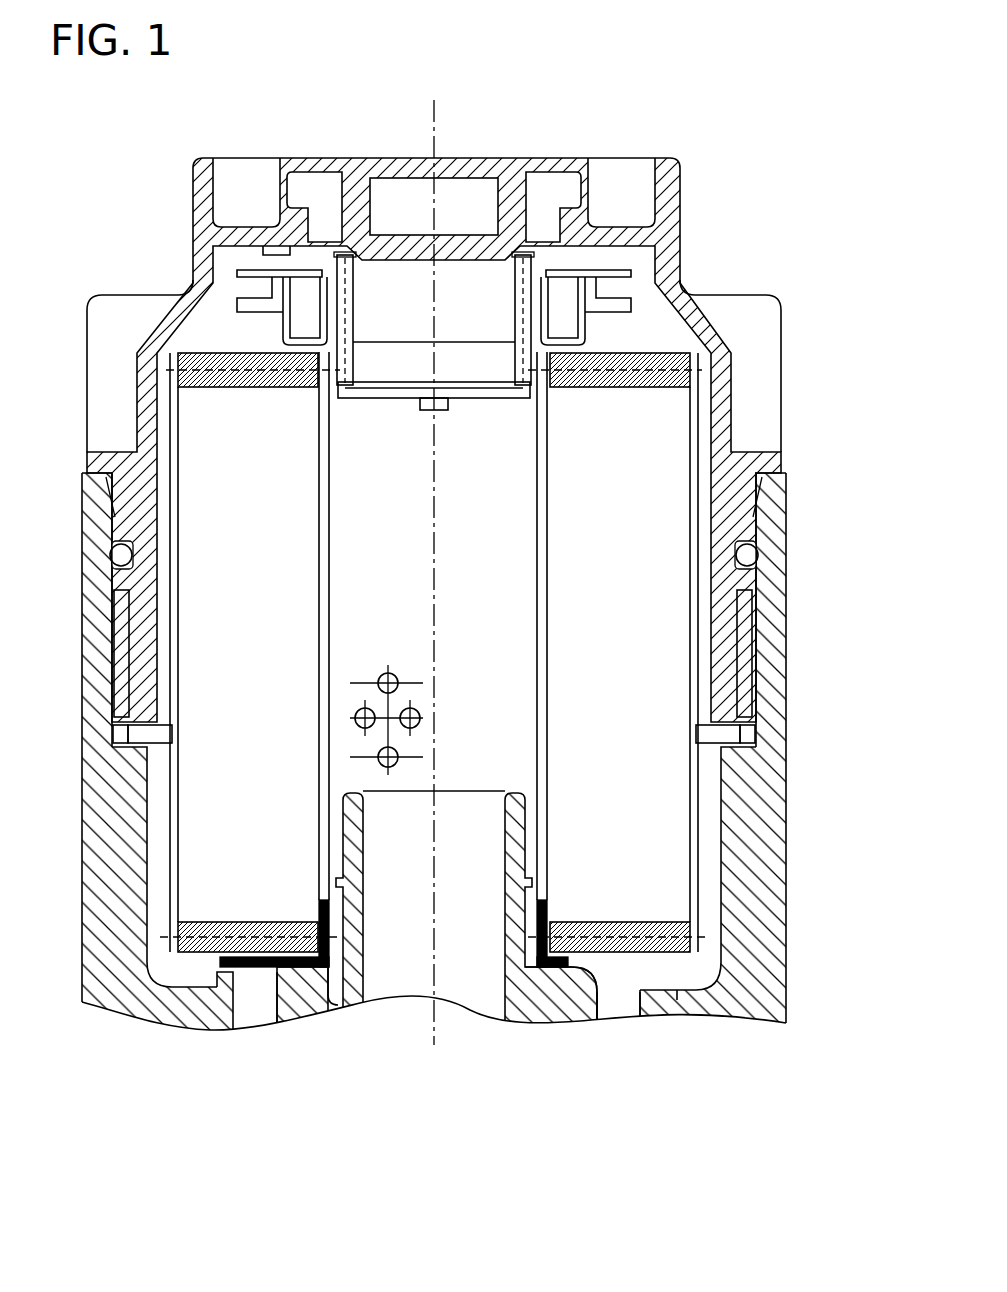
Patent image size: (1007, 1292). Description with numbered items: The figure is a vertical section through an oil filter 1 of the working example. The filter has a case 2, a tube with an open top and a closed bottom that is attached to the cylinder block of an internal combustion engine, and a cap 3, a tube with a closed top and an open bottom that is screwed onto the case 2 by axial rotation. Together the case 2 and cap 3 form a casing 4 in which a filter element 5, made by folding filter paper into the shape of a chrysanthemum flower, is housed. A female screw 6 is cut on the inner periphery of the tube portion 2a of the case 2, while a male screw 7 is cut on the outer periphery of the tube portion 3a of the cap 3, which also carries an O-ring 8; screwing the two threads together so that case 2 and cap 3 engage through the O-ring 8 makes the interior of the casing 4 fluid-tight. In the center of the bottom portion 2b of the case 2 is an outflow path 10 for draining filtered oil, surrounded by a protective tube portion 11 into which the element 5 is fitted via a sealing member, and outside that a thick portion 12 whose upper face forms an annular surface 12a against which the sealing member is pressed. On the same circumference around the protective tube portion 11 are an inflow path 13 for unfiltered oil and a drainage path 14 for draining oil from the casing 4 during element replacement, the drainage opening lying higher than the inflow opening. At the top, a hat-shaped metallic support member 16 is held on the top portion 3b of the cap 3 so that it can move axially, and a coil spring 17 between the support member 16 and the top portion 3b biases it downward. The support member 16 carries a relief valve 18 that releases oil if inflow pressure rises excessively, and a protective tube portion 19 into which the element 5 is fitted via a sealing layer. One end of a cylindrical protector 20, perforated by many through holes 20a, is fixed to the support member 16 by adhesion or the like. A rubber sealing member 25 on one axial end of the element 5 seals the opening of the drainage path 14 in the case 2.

The oil filter 1 is at (462, 603).
The case 2 is at (483, 809).
The tube portion 2a is at (775, 637).
The bottom portion 2b is at (668, 1024).
The cap 3 is at (491, 402).
The tube portion 3a is at (727, 402).
The top portion 3b is at (510, 175).
The casing 4 is at (790, 502).
The filter element 5 is at (443, 645).
The female screw 6 is at (750, 733).
The male screw 7 is at (763, 655).
The O-ring 8 is at (750, 553).
The outflow path 10 is at (368, 957).
The protective tube portion 11 is at (510, 833).
The thick portion 12 is at (305, 972).
The annular surface 12a is at (677, 1003).
The inflow path 13 is at (593, 1003).
The drainage path 14 is at (252, 1000).
The support member 16 is at (258, 268).
The coil spring 17 is at (353, 315).
The relief valve 18 is at (463, 385).
The protective tube portion 19 is at (455, 235).
The protector 20 is at (322, 553).
The through holes 20a is at (420, 717).
The sealing member 25 is at (212, 962).